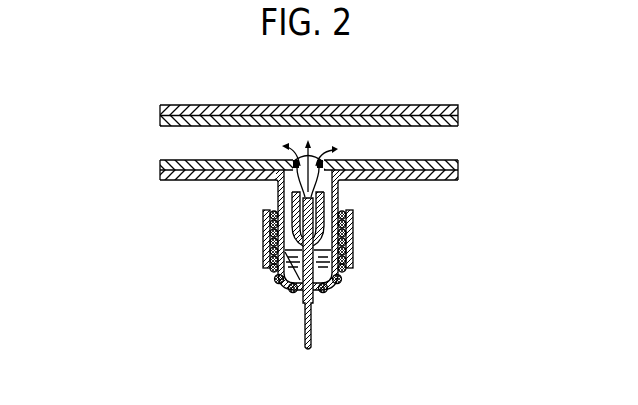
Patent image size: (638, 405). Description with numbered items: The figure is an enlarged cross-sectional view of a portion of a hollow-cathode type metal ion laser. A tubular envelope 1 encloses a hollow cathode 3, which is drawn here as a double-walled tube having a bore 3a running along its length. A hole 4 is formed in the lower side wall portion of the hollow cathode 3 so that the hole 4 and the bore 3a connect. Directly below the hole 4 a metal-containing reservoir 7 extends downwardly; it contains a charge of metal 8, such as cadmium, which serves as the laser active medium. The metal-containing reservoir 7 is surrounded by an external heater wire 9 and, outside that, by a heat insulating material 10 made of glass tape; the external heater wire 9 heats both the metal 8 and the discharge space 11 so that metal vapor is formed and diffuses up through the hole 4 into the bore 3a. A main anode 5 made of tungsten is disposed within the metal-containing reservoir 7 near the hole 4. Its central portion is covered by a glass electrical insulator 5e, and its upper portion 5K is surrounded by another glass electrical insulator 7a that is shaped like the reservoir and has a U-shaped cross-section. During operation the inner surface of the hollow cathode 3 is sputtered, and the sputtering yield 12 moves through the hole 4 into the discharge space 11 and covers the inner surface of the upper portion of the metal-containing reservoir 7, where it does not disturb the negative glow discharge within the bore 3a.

The tubular envelope 1 is at (407, 111).
The hollow cathode 3 is at (367, 120).
The bore 3a is at (448, 138).
The hole 4 is at (297, 160).
The discharge space 11 is at (331, 181).
The sputtering yield 12 is at (274, 182).
The upper portion of the main anode 5K is at (333, 196).
The main anode 5 is at (313, 328).
The electrical insulator 5e is at (291, 286).
The electrical insulator 7a is at (324, 194).
The heat insulating material 10 is at (354, 241).
The external heater wire 9 is at (347, 266).
The metal-containing reservoir 7 is at (277, 275).
The metal 8 is at (327, 289).